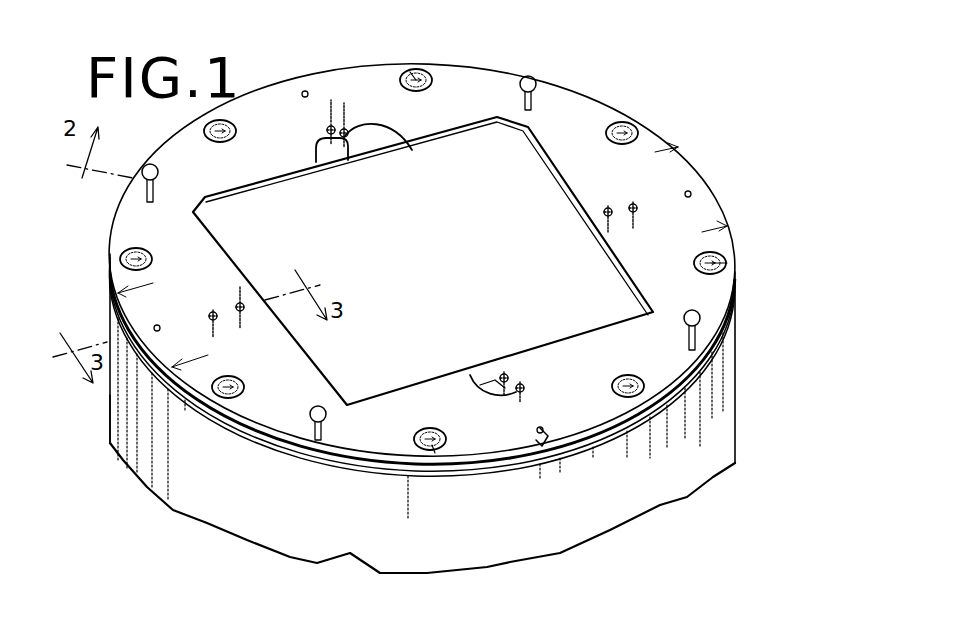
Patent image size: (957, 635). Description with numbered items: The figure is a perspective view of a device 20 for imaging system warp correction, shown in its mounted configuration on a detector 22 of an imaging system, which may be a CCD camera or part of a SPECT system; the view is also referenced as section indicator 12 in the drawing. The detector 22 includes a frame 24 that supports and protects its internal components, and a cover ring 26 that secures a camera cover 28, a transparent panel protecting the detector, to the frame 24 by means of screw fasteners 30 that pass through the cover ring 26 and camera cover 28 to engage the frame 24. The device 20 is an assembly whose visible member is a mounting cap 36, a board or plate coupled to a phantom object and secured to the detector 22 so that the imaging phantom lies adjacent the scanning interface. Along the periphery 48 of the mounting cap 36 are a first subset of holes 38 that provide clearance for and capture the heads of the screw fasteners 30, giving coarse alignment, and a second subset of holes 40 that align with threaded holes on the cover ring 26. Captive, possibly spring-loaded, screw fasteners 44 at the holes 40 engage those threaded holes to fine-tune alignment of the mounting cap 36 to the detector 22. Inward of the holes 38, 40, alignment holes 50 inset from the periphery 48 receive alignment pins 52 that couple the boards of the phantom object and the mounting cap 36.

The workpiece holding fixture 12 is at (215, 208).
The device 20 is at (508, 64).
The detector 22 is at (110, 403).
The frame 24 is at (736, 378).
The cover ring 26 is at (736, 341).
The camera cover 28 is at (193, 410).
The screw fasteners 30 is at (410, 72).
The mounting cap 36 is at (544, 284).
The first subset of holes 38 is at (221, 121).
The second subset of holes 40 is at (154, 182).
The screw fasteners 44 is at (143, 167).
The periphery 48 is at (550, 450).
The alignment holes 50 is at (322, 152).
The alignment pins 52 is at (333, 125).